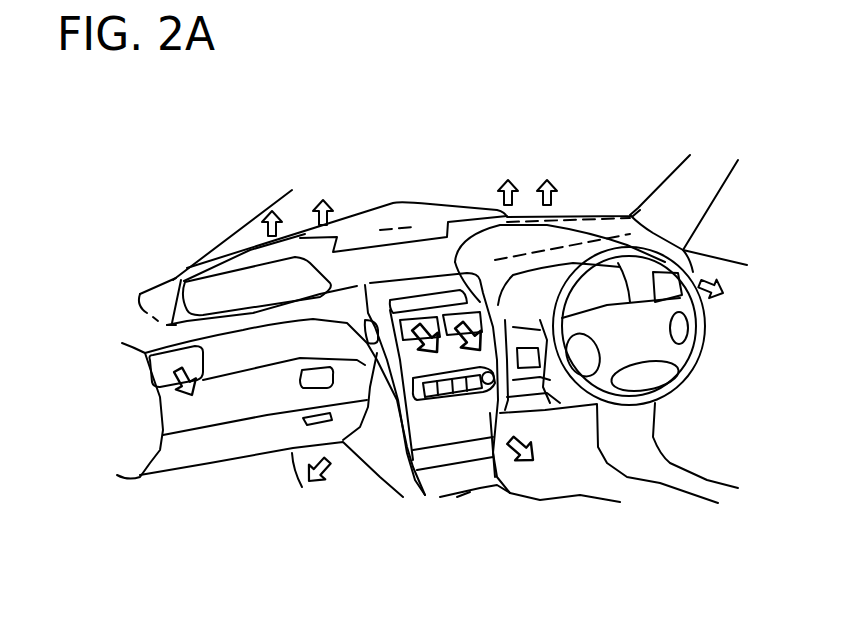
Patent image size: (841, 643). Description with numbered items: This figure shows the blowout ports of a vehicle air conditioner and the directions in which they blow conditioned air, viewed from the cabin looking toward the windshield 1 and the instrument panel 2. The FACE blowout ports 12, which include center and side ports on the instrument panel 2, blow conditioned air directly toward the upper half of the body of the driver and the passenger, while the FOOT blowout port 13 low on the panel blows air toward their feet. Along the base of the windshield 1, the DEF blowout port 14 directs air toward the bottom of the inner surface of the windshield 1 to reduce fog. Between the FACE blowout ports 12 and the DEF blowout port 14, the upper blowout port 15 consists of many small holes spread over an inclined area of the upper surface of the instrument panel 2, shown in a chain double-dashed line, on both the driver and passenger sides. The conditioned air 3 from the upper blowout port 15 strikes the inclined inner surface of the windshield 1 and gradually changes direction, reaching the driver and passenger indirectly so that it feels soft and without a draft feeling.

The windshield 1 is at (538, 140).
The instrument panel 2 is at (172, 287).
The conditioned air 3 is at (383, 220).
The FACE blowout port 12 is at (152, 384).
The FOOT blowout port 13 is at (342, 450).
The DEF blowout port 14 is at (307, 228).
The upper blowout port 15 is at (255, 263).